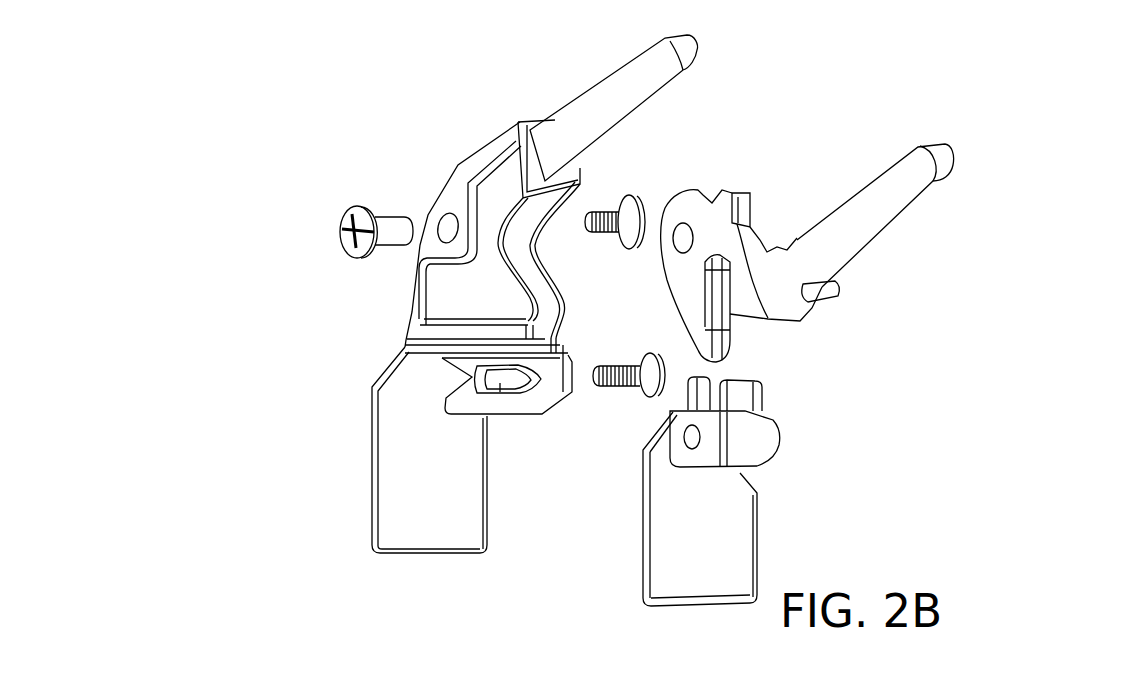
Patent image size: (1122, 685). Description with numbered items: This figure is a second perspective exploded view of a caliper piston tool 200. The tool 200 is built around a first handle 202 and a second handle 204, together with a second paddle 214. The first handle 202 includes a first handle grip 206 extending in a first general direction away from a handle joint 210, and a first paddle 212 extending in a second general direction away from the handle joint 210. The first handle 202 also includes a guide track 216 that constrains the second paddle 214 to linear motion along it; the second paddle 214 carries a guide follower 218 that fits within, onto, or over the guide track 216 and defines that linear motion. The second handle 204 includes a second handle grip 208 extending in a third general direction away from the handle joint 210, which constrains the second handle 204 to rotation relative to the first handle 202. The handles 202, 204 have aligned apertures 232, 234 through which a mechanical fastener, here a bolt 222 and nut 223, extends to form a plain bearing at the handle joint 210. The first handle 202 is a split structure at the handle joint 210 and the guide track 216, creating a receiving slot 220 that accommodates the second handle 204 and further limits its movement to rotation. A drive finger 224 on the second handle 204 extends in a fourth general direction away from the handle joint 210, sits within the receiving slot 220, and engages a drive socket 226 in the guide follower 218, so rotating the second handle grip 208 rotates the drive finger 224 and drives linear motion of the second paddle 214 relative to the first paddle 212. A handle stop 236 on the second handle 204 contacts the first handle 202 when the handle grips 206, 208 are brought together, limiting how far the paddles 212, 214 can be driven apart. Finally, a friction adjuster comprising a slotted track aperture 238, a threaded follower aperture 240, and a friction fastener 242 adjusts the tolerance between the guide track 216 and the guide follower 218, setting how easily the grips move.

The caliper piston tool 200 is at (380, 66).
The first handle 202 is at (692, 110).
The second handle 204 is at (895, 259).
The first handle grip 206 is at (587, 100).
The second handle grip 208 is at (900, 161).
The handle joint 210 is at (407, 179).
The first paddle 212 is at (371, 420).
The second paddle 214 is at (758, 563).
The guide track 216 is at (518, 414).
The guide follower 218 is at (773, 420).
The receiving slot 220 is at (540, 331).
The bolt 222 is at (340, 224).
The nut 223 is at (625, 200).
The drive finger 224 is at (727, 353).
The drive socket 226 is at (713, 391).
The aperture 232 is at (445, 213).
The aperture 234 is at (675, 254).
The handle stop 236 is at (752, 215).
The track aperture 238 is at (503, 385).
The follower aperture 240 is at (698, 442).
The friction fastener 242 is at (650, 396).